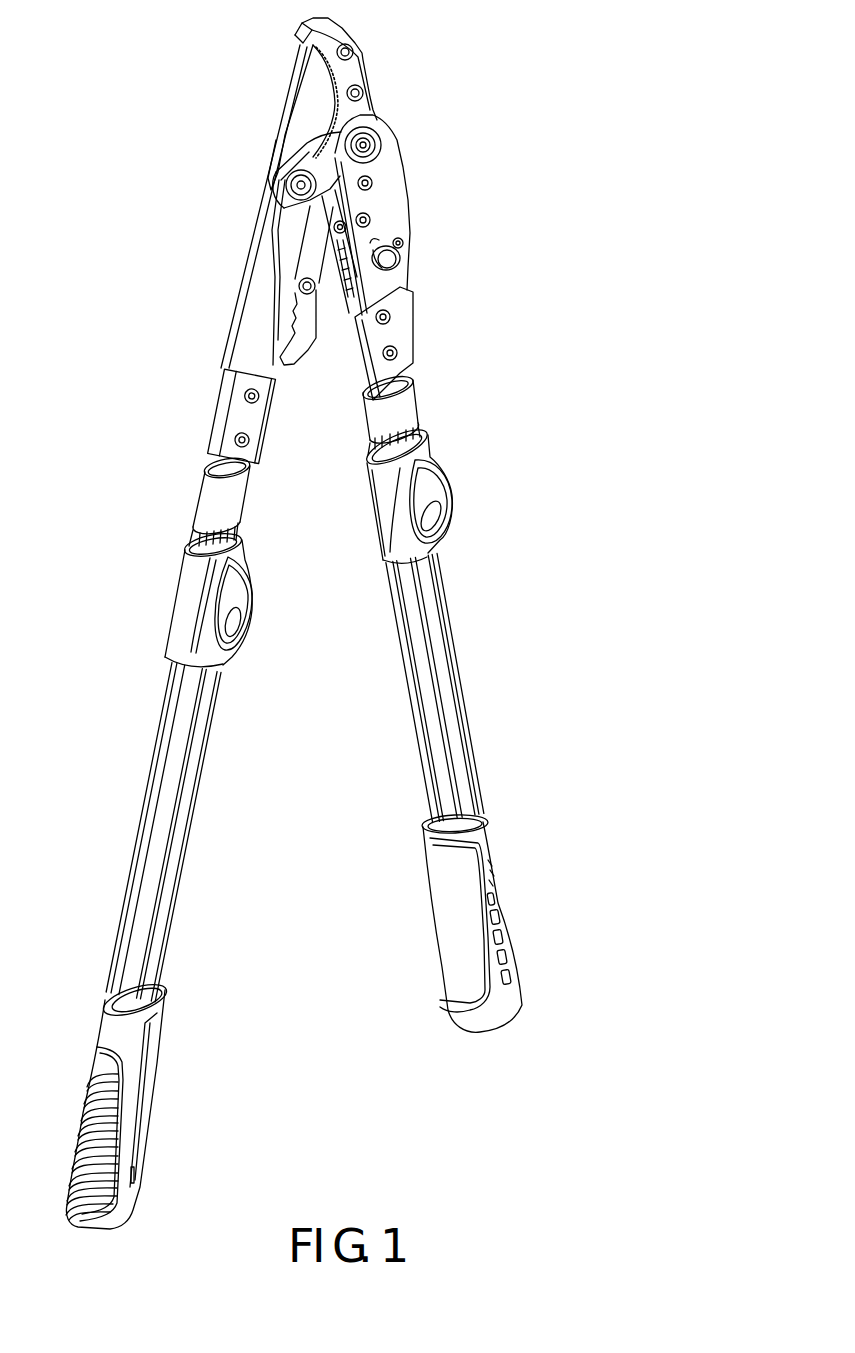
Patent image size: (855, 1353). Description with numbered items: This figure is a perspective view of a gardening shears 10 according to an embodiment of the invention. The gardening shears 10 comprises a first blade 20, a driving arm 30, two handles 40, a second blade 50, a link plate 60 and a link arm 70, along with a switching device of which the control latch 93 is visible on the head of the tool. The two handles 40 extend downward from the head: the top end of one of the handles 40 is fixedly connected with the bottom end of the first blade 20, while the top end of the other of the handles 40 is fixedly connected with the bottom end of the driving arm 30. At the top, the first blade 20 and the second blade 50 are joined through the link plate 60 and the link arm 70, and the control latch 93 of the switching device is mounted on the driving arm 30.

The gardening shears 10 is at (504, 109).
The first blade 20 is at (262, 293).
The driving arm 30 is at (440, 347).
The handles 40 is at (150, 868).
The second blade 50 is at (284, 229).
The link plate 60 is at (323, 160).
The link arm 70 is at (328, 296).
The control latch 93 is at (398, 272).